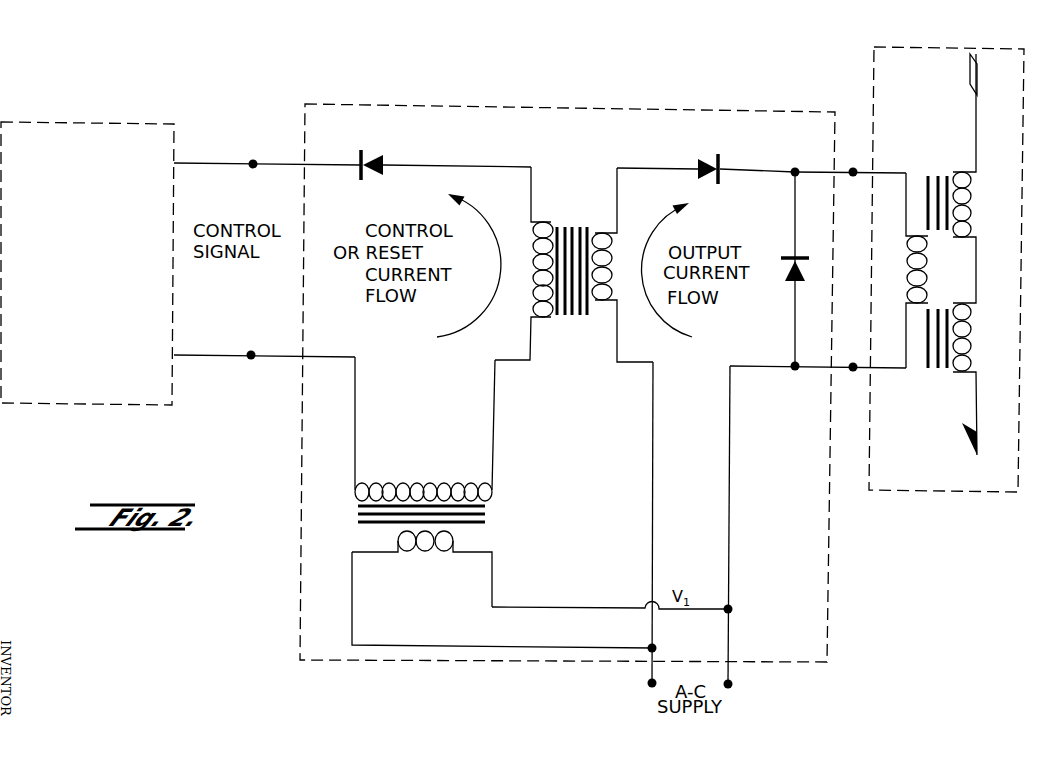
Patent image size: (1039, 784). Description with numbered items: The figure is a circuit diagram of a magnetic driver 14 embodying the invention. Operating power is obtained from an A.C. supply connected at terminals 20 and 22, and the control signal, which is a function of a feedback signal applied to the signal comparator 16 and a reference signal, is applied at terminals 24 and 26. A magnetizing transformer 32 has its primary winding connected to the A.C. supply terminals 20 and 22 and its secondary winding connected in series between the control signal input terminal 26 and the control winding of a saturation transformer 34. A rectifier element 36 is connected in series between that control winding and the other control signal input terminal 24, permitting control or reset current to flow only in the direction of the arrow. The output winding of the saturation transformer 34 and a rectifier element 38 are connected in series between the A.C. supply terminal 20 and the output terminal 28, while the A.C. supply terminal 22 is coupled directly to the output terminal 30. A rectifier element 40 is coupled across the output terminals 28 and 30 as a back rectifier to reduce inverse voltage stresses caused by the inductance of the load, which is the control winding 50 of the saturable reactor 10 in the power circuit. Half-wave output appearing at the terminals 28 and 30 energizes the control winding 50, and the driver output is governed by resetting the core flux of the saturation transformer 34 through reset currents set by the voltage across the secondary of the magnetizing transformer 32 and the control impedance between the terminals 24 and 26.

The saturable reactor 10 is at (946, 248).
The magnetic driver 14 is at (565, 104).
The signal comparator 16 is at (147, 120).
The A.C. supply terminal 20 is at (650, 685).
The A.C. supply terminal 22 is at (734, 688).
The control signal input terminal 24 is at (255, 160).
The control signal input terminal 26 is at (251, 360).
The output terminal 28 is at (854, 170).
The output terminal 30 is at (853, 372).
The magnetizing transformer 32 is at (488, 516).
The saturation transformer 34 is at (570, 222).
The rectifier element 36 is at (372, 160).
The rectifier element 38 is at (719, 163).
The rectifier element 40 is at (797, 281).
The control winding 50 is at (910, 278).